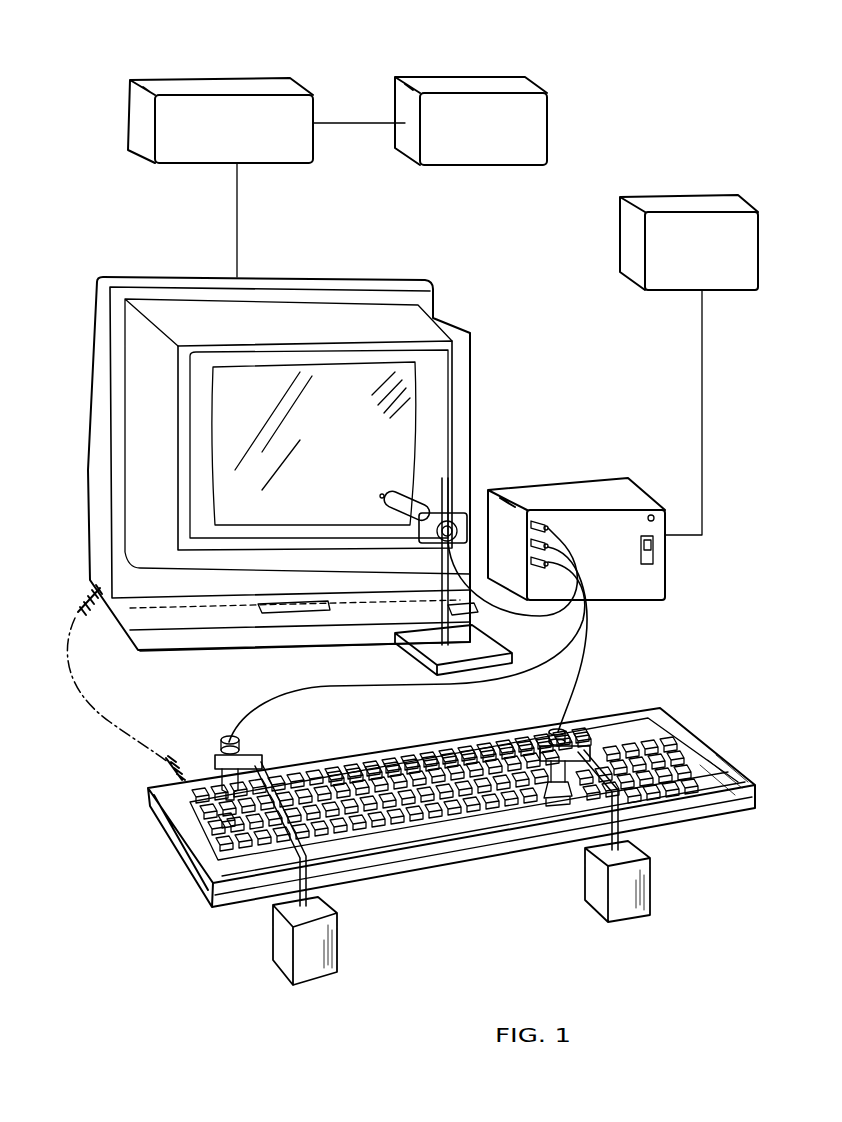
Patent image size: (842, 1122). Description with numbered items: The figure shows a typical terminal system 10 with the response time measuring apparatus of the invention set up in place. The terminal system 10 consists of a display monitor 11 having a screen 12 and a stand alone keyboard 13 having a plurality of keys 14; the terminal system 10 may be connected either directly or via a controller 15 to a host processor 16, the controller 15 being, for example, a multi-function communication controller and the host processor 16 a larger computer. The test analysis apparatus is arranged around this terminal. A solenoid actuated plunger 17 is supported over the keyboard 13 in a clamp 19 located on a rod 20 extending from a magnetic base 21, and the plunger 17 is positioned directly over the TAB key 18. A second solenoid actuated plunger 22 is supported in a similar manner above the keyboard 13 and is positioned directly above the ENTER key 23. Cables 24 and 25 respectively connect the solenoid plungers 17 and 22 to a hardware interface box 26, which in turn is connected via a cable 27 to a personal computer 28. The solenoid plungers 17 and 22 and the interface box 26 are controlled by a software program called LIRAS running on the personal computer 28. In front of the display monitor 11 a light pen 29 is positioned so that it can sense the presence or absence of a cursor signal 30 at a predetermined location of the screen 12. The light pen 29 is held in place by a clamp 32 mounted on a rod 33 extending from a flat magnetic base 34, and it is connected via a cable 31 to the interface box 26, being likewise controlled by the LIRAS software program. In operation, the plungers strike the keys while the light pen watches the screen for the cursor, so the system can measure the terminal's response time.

The terminal system 10 is at (176, 913).
The display monitor 11 is at (198, 307).
The screen 12 is at (415, 367).
The stand alone keyboard 13 is at (707, 823).
The keys 14 is at (400, 768).
The controller 15 is at (260, 75).
The host processor 16 is at (498, 74).
The solenoid actuated plunger 17 is at (197, 803).
The TAB key 18 is at (217, 828).
The clamp 19 is at (247, 752).
The rod 20 is at (307, 880).
The magnetic base 21 is at (282, 943).
The solenoid actuated plunger 22 is at (545, 800).
The ENTER key 23 is at (557, 810).
The cable 24 is at (268, 683).
The cable 25 is at (579, 667).
The hardware interface box 26 is at (585, 490).
The cable 27 is at (700, 328).
The personal computer 28 is at (627, 218).
The light pen 29 is at (417, 493).
The cursor signal 30 is at (378, 496).
The cable 31 is at (550, 620).
The clamp 32 is at (467, 503).
The rod 33 is at (475, 612).
The flat magnetic base 34 is at (396, 648).